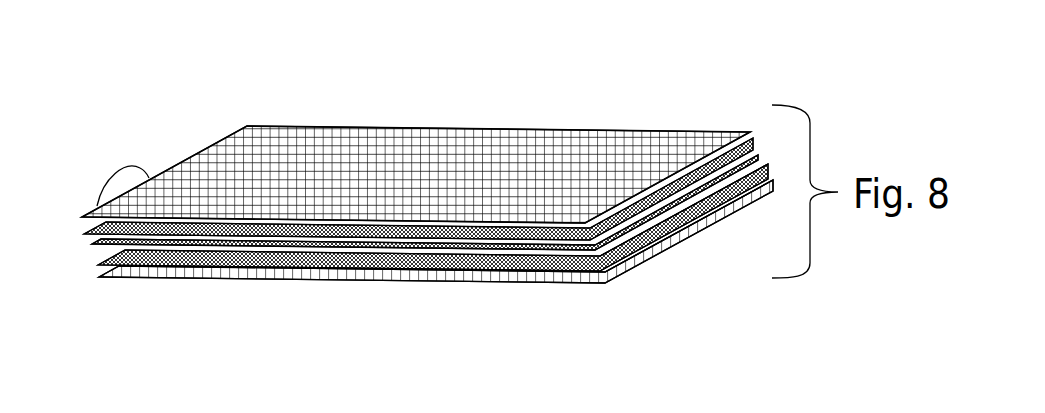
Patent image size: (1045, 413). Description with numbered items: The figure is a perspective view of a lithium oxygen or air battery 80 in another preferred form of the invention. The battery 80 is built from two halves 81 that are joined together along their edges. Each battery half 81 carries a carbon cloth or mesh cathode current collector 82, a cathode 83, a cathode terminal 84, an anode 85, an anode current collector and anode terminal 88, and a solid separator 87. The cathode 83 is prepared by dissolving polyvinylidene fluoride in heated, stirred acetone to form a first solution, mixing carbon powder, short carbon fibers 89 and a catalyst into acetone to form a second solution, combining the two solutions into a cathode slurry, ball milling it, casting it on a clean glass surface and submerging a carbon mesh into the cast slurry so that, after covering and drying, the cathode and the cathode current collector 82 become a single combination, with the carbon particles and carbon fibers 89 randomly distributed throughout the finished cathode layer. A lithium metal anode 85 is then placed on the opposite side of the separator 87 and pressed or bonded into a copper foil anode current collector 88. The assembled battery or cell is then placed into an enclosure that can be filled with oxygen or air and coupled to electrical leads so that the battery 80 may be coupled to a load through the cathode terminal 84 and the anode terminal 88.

The lithium oxygen or air battery 80 is at (315, 96).
The battery half 81 is at (96, 181).
The cathode current collector 82 is at (212, 145).
The cathode 83 is at (667, 192).
The cathode terminal 84 is at (120, 168).
The anode 85 is at (617, 240).
The solid separator 87 is at (700, 187).
The anode current collector and anode terminal 88 is at (763, 166).
The short carbon fibers 89 is at (688, 170).